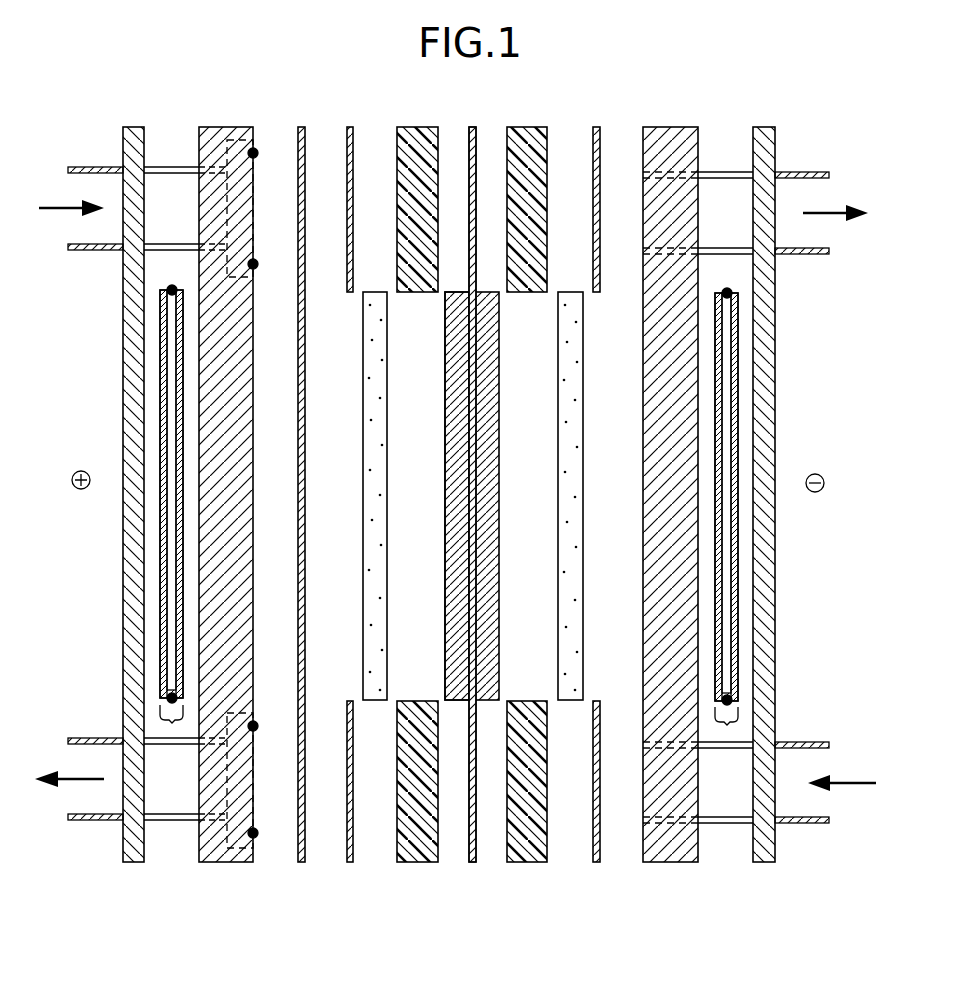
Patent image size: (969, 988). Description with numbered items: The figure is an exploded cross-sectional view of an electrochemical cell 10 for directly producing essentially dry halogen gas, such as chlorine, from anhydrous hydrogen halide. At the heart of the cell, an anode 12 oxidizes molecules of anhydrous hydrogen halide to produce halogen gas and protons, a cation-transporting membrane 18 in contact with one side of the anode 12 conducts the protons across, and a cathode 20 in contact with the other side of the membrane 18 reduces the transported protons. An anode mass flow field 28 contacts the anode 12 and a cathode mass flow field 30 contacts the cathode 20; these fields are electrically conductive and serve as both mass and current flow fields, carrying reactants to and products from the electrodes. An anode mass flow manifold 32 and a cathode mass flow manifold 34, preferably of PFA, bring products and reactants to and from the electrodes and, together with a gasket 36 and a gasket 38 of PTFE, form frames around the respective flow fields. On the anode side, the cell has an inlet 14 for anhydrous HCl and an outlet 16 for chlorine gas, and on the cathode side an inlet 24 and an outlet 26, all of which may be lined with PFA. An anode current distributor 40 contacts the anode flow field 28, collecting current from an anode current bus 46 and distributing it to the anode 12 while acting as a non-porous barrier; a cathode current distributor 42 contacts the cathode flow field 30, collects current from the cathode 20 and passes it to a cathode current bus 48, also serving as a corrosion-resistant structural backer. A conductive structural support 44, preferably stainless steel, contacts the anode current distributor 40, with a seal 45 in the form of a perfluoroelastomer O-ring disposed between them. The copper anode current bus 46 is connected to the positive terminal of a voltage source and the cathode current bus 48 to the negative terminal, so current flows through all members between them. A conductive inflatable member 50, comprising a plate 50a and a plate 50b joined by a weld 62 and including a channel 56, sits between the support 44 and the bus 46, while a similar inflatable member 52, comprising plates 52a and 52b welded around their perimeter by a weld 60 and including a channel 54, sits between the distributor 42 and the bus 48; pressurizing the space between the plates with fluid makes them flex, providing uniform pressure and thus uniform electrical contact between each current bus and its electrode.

The electrochemical cell 10 is at (178, 48).
The anode 12 is at (445, 400).
The inlet 14 is at (97, 166).
The outlet 16 is at (97, 739).
The cation-transporting membrane 18 is at (472, 862).
The cathode 20 is at (500, 400).
The inlet 24 is at (810, 742).
The outlet 26 is at (795, 171).
The anode mass flow field 28 is at (370, 585).
The cathode mass flow field 30 is at (567, 580).
The anode mass flow manifold 32 is at (427, 126).
The cathode mass flow manifold 34 is at (528, 126).
The gasket 36 is at (350, 126).
The gasket 38 is at (598, 126).
The anode current distributor 40 is at (302, 862).
The cathode current distributor 42 is at (688, 862).
The conductive structural support 44 is at (223, 862).
The seal 45 is at (255, 148).
The anode current bus 46 is at (137, 862).
The cathode current bus 48 is at (765, 862).
The conductive inflatable member 50 is at (102, 514).
The plate 50a is at (160, 345).
The plate 50b is at (190, 290).
The inflatable member 52 is at (794, 519).
The plate 52a is at (710, 300).
The plate 52b is at (737, 348).
The channel 54 is at (727, 417).
The channel 56 is at (172, 412).
The weld 60 is at (728, 293).
The weld 62 is at (170, 290).